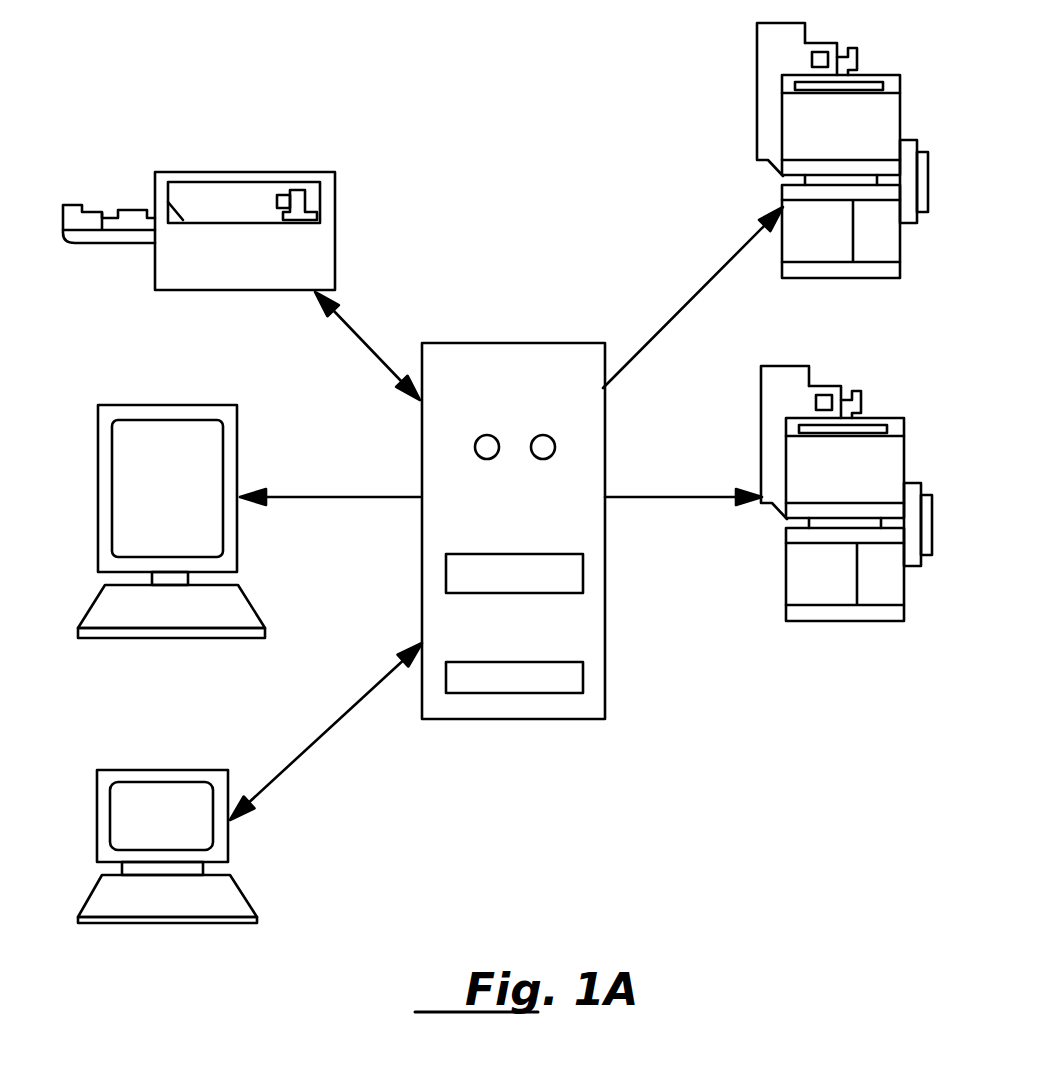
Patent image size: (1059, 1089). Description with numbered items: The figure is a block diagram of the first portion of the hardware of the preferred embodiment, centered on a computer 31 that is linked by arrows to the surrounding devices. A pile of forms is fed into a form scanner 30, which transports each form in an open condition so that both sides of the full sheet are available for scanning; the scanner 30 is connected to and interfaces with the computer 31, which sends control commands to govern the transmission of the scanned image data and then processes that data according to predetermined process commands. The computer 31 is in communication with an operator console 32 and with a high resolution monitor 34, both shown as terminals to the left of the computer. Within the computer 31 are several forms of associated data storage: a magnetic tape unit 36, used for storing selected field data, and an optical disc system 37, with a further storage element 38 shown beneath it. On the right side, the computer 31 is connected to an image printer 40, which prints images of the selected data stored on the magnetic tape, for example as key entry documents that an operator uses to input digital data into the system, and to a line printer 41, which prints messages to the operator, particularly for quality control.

The form scanner 30 is at (327, 212).
The computer 31 is at (493, 351).
The operator console 32 is at (203, 775).
The high resolution monitor 34 is at (232, 465).
The magnetic tape unit 36 is at (546, 434).
The optical disc system 37 is at (513, 554).
The disk drive 38 is at (520, 662).
The image printer 40 is at (777, 123).
The line printer 41 is at (772, 450).